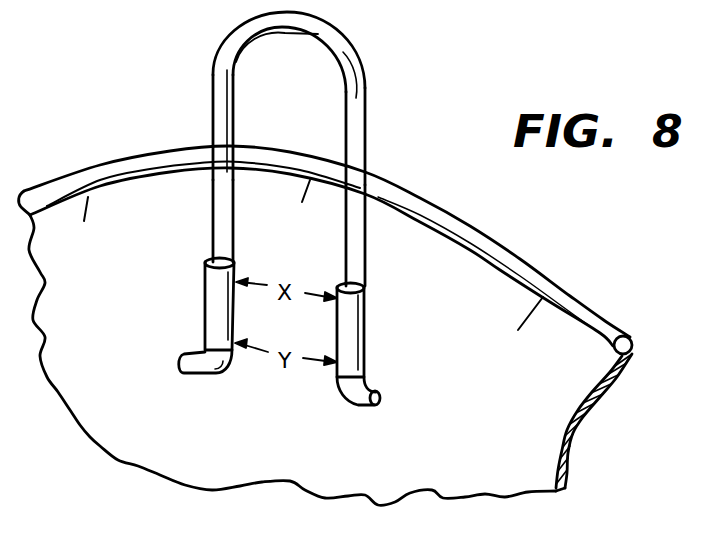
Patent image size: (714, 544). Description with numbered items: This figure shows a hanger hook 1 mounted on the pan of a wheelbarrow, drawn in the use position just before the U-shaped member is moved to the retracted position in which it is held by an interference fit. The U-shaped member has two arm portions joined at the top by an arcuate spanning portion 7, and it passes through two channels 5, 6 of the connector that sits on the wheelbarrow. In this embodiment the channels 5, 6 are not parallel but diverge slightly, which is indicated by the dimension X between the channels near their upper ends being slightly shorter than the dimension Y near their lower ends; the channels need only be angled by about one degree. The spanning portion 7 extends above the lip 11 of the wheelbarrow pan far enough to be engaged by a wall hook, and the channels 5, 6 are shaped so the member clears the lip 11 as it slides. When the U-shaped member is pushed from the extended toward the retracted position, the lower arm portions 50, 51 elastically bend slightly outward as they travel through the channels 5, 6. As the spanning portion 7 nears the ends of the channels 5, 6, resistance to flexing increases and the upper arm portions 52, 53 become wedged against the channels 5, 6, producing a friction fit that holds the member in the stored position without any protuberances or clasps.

The hanger hook 1 is at (127, 410).
The channel 5 is at (367, 338).
The channel 6 is at (202, 310).
The spanning portion 7 is at (296, 149).
The lip 11 is at (607, 311).
The lower arm portion 50 is at (209, 245).
The lower arm portion 51 is at (366, 263).
The upper arm portion 52 is at (209, 115).
The upper arm portion 53 is at (372, 120).